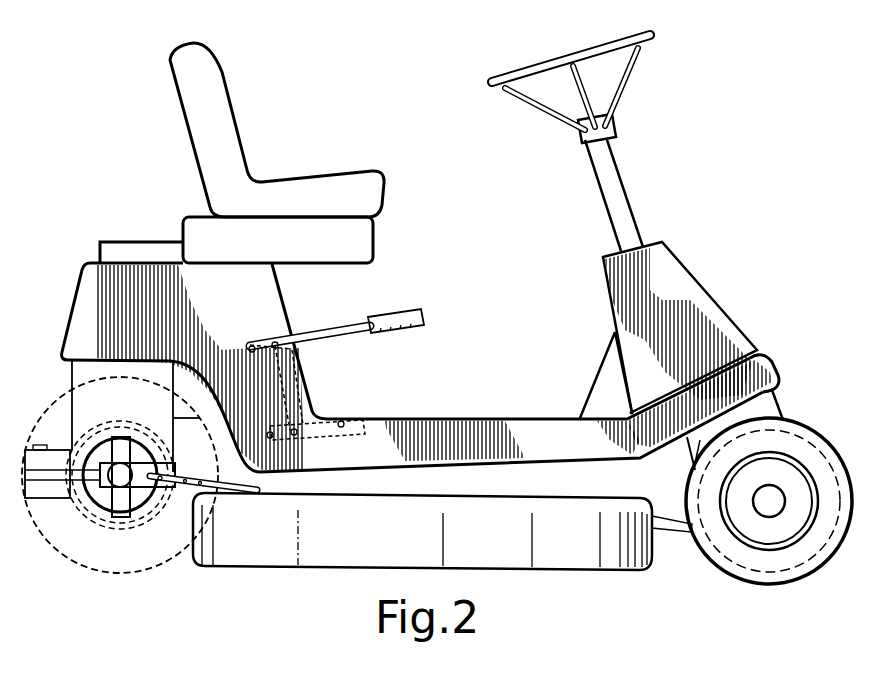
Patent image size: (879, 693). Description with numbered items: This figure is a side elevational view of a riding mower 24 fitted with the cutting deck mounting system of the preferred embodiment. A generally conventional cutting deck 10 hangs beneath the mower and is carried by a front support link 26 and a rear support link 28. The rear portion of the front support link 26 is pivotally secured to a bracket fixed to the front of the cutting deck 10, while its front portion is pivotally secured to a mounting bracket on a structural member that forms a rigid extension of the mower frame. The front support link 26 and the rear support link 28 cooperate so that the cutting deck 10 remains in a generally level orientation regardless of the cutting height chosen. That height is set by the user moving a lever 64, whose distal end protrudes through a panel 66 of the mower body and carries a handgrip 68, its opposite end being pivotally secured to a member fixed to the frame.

The cutting deck 10 is at (503, 565).
The mower 24 is at (665, 222).
The front support link 26 is at (674, 531).
The rear support link 28 is at (227, 488).
The lever 64 is at (338, 328).
The panel 66 is at (308, 375).
The handgrip 68 is at (424, 320).